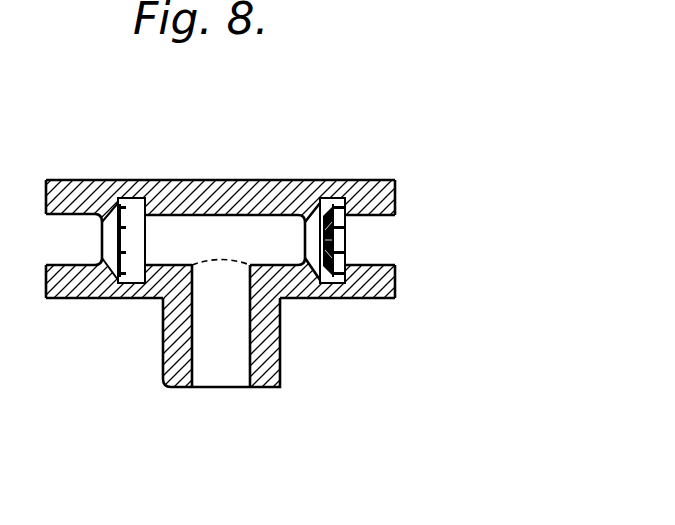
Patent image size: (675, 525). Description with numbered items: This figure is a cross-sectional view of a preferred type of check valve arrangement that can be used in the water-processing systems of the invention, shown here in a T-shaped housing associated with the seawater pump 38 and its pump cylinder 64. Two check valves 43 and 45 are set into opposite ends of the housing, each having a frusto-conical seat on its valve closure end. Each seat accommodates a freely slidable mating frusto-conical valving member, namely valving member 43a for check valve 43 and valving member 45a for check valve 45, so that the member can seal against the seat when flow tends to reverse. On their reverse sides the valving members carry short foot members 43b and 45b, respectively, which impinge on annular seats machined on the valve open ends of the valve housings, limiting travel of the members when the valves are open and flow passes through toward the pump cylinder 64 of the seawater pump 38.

The seawater pump 38 is at (162, 350).
The pump cylinder 64 is at (266, 344).
The check valve 43 is at (328, 207).
The frusto-conical valving member 43a is at (330, 237).
The foot members 43b is at (344, 212).
The check valve 45 is at (156, 207).
The frusto-conical valving member 45a is at (110, 236).
The foot members 45b is at (122, 208).